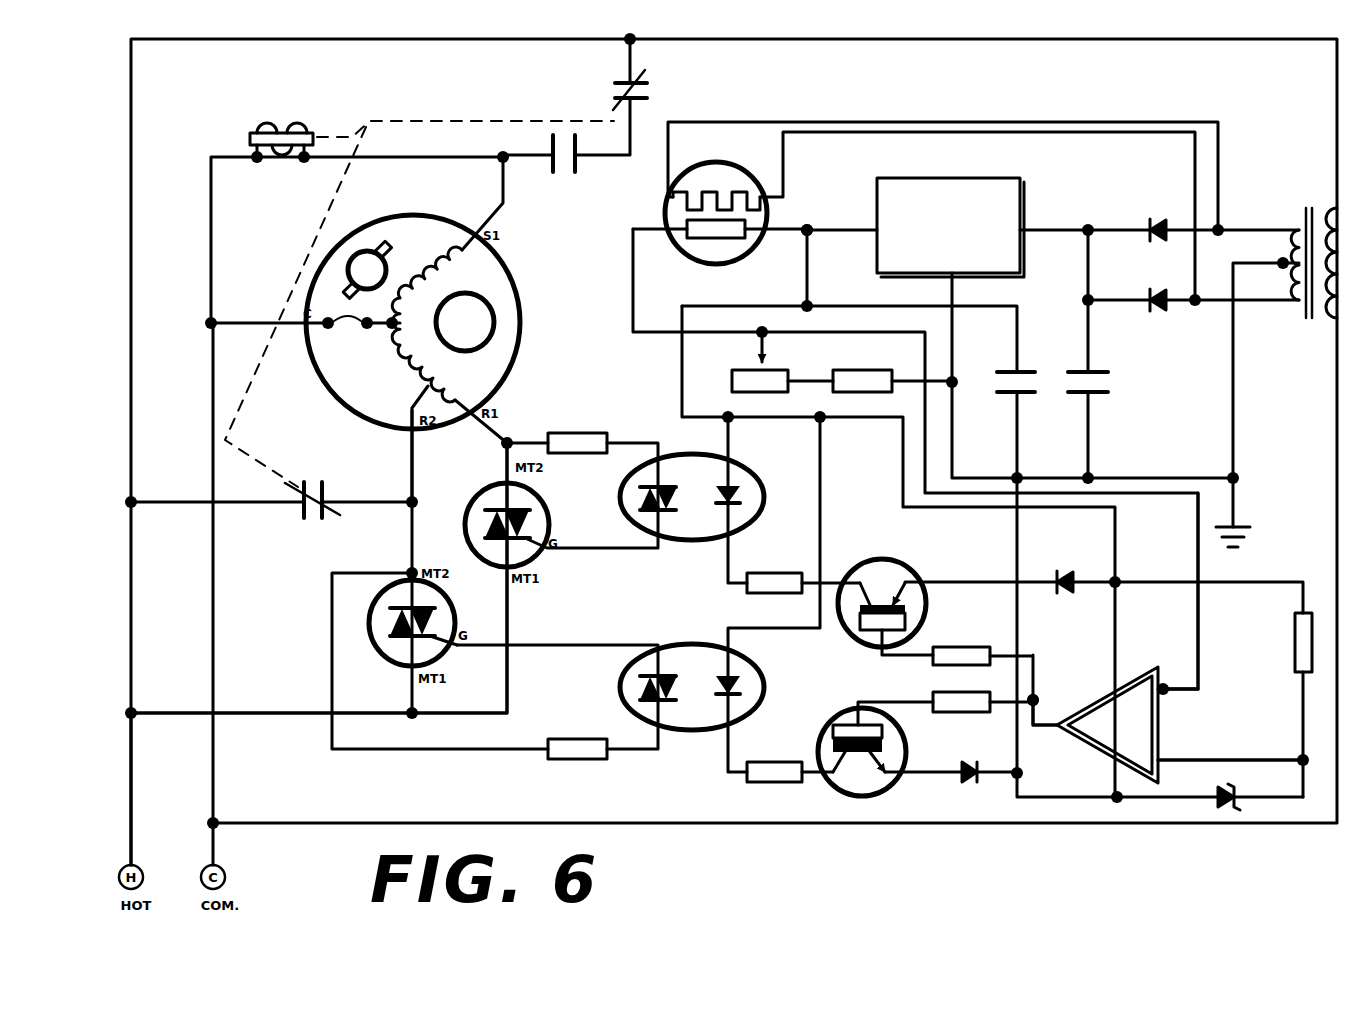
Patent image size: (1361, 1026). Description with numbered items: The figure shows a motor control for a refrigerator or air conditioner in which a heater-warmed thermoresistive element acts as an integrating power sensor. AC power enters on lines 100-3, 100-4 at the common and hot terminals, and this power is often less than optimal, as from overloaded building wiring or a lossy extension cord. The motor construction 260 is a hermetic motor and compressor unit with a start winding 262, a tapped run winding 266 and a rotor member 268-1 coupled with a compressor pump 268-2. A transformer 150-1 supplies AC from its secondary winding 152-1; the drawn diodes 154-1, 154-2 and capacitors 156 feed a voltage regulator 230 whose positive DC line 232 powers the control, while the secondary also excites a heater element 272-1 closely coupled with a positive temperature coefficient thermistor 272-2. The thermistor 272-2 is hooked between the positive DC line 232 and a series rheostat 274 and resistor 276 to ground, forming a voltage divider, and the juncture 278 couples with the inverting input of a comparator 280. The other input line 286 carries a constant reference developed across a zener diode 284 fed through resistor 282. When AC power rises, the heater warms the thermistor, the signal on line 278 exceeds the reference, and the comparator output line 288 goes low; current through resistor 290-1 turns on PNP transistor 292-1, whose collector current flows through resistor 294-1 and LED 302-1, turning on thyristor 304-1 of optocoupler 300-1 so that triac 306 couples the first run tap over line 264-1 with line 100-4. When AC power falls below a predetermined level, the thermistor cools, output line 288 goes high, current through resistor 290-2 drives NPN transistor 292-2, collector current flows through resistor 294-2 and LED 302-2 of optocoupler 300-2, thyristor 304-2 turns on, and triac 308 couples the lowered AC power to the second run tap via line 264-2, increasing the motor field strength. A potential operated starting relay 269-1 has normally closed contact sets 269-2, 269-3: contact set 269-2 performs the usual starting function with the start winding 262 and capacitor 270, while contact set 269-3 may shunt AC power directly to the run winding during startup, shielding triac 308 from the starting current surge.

The AC power input line 100-3 is at (250, 760).
The AC power input line 100-4 is at (166, 760).
The transformer 150-1 is at (1309, 204).
The secondary winding 152-1 is at (1284, 274).
The rectifier diode 154-1 is at (1144, 222).
The rectifier diode 154-2 is at (1148, 309).
The filter capacitor 156 is at (1112, 380).
The voltage regulator 230 is at (945, 165).
The +DC line 232 is at (811, 221).
The motor construction 260 is at (520, 282).
The start winding 262 is at (448, 238).
The line to tap connection R1 264-1 is at (560, 413).
The line to tap connection R2 264-2 is at (404, 462).
The tapped run winding 266 is at (388, 362).
The rotor member 268-1 is at (498, 340).
The compressor pump 268-2 is at (358, 243).
The potential operated starting relay 269-1 is at (293, 126).
The normally closed contact set 269-2 is at (692, 80).
The normally closed contact set 269-3 is at (296, 521).
The capacitor 270 is at (662, 210).
The heater element 272-1 is at (717, 188).
The positive temperature coefficient thermistor 272-2 is at (700, 243).
The rheostat 274 is at (730, 382).
The resistor 276 is at (858, 360).
The juncture line 278 is at (1201, 662).
The comparator 280 is at (1090, 697).
The resistor 282 is at (1292, 662).
The zener diode 284 is at (1218, 806).
The comparator input line 286 is at (1212, 745).
The comparator output line 288 is at (1040, 733).
The resistor 290-1 is at (962, 646).
The resistor 290-2 is at (960, 713).
The PNP transistor 292-1 is at (937, 546).
The NPN transistor 292-2 is at (830, 727).
The resistor 294-1 is at (778, 558).
The resistor 294-2 is at (776, 784).
The optocoupler 300-1 is at (686, 542).
The optocoupler 300-2 is at (690, 642).
The LED 302-1 is at (786, 470).
The LED 302-2 is at (744, 687).
The thyristor portion 304-1 is at (638, 498).
The thyristor portion 304-2 is at (638, 688).
The triac 306 is at (470, 492).
The triac 308 is at (392, 662).